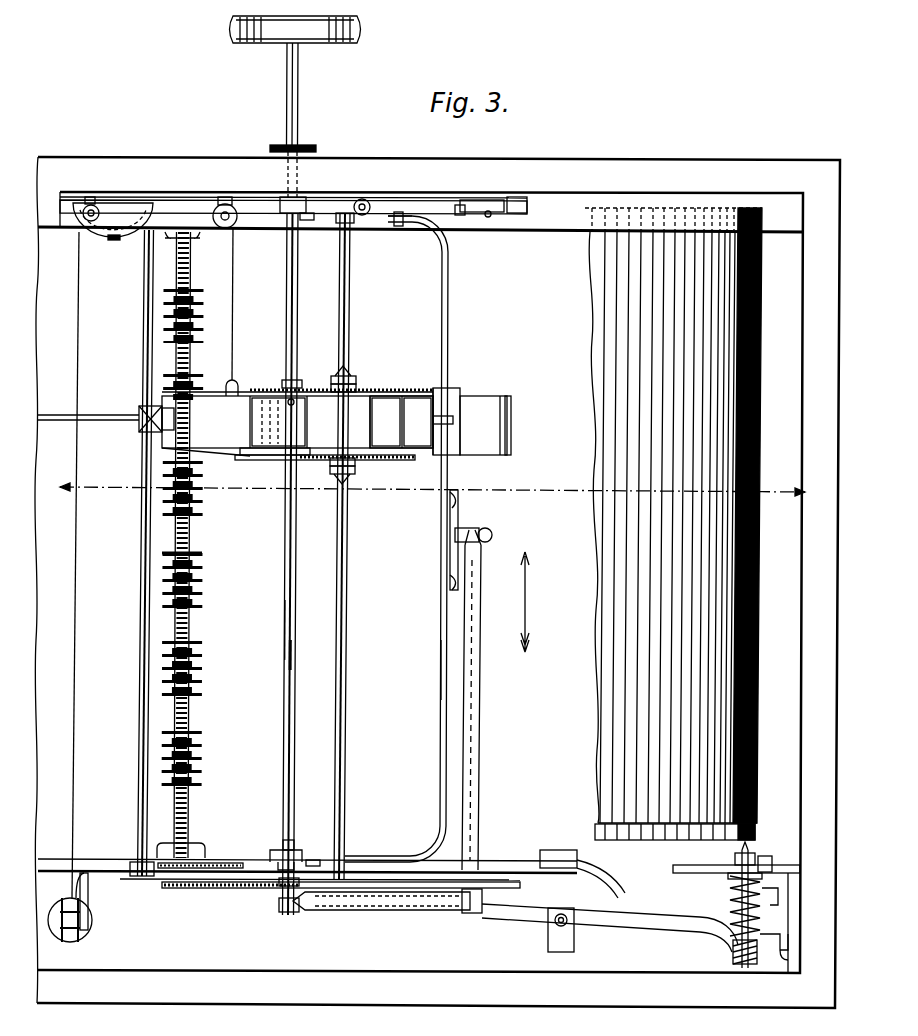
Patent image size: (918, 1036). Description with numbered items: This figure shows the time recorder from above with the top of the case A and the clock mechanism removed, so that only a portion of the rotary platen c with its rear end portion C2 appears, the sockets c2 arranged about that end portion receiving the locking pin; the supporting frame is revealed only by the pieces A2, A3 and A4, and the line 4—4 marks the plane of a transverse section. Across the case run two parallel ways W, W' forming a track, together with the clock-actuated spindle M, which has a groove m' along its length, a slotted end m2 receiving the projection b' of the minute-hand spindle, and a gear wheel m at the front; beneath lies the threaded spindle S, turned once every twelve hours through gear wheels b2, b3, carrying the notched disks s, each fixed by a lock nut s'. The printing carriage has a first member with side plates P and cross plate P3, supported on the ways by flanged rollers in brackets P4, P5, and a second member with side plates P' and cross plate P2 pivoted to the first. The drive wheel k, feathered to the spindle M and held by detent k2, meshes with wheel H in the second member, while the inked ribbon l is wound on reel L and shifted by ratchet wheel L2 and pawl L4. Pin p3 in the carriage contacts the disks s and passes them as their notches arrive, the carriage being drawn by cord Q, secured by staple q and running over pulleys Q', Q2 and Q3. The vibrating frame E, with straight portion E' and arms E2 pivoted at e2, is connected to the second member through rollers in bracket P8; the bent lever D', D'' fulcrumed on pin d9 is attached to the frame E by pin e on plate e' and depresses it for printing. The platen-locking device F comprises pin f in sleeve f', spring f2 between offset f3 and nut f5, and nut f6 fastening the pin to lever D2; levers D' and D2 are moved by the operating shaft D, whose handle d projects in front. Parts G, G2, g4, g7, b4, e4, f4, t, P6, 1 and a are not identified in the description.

The case A is at (672, 158).
The frame piece A2 is at (120, 878).
The frame piece A3 is at (673, 869).
The frame piece A4 is at (566, 233).
The operating knob or handle d is at (244, 45).
The operating shaft D is at (297, 491).
The gear wheel m is at (303, 140).
The cam hanger G is at (100, 238).
The grooved pulley Q2 is at (72, 228).
The cord Q is at (165, 563).
The grooved pulley Q' is at (237, 231).
The grooved pulley Q3 is at (92, 932).
The roller G2 is at (372, 216).
The pivot e2 is at (305, 218).
The vibrating frame E is at (411, 537).
The arm E2 is at (424, 226).
The straight portion E' is at (422, 670).
The rail fitting g4 is at (465, 215).
The rail end block g7 is at (500, 211).
The rotary drum (platen) c is at (602, 632).
The circular end portion C2 is at (628, 838).
The socket c2 is at (752, 833).
The clock-actuated spindle S is at (190, 712).
The disk s is at (171, 540).
The lock nut s' is at (193, 560).
The upper screw bearing b4 is at (200, 238).
The gear wheel b3 is at (170, 888).
The side plate P is at (297, 414).
The cross plate P3 is at (278, 422).
The wheel H is at (386, 393).
The reel L is at (386, 422).
The inked ribbon l is at (417, 422).
The end block 1 is at (483, 425).
The bracket P8 is at (455, 395).
The cross plate P2 is at (508, 426).
The side plate P' is at (429, 414).
The bracket P4 is at (360, 388).
The cone collar t is at (348, 372).
The bracket P5 is at (158, 414).
The push rod P6 is at (120, 416).
The pin p3 is at (140, 430).
The staple q is at (240, 386).
The drive wheel k is at (298, 395).
The detent k2 is at (295, 403).
The ratchet wheel L2 is at (401, 461).
The pawl L4 is at (302, 461).
The way W is at (359, 546).
The way W' is at (126, 553).
The rod foot e4 is at (196, 858).
The bracket f4 is at (274, 862).
The slot m2 is at (294, 848).
The clock-actuated spindle M is at (284, 626).
The groove m' is at (275, 655).
The plate e' is at (537, 695).
The pin e is at (475, 529).
The bent lever D'' is at (494, 700).
The section line 4 is at (433, 492).
The gear wheel b2 is at (228, 862).
The projection b' is at (341, 898).
The pulley bracket a is at (90, 905).
The bent lever D' is at (381, 919).
The pin d9 is at (486, 901).
The lever D2 is at (540, 926).
The pin f is at (763, 904).
The hollow sleeve f' is at (740, 861).
The locking device F is at (735, 906).
The offset f3 is at (735, 879).
The helical spring f2 is at (760, 899).
The nut f5 is at (763, 943).
The second nut f6 is at (734, 956).